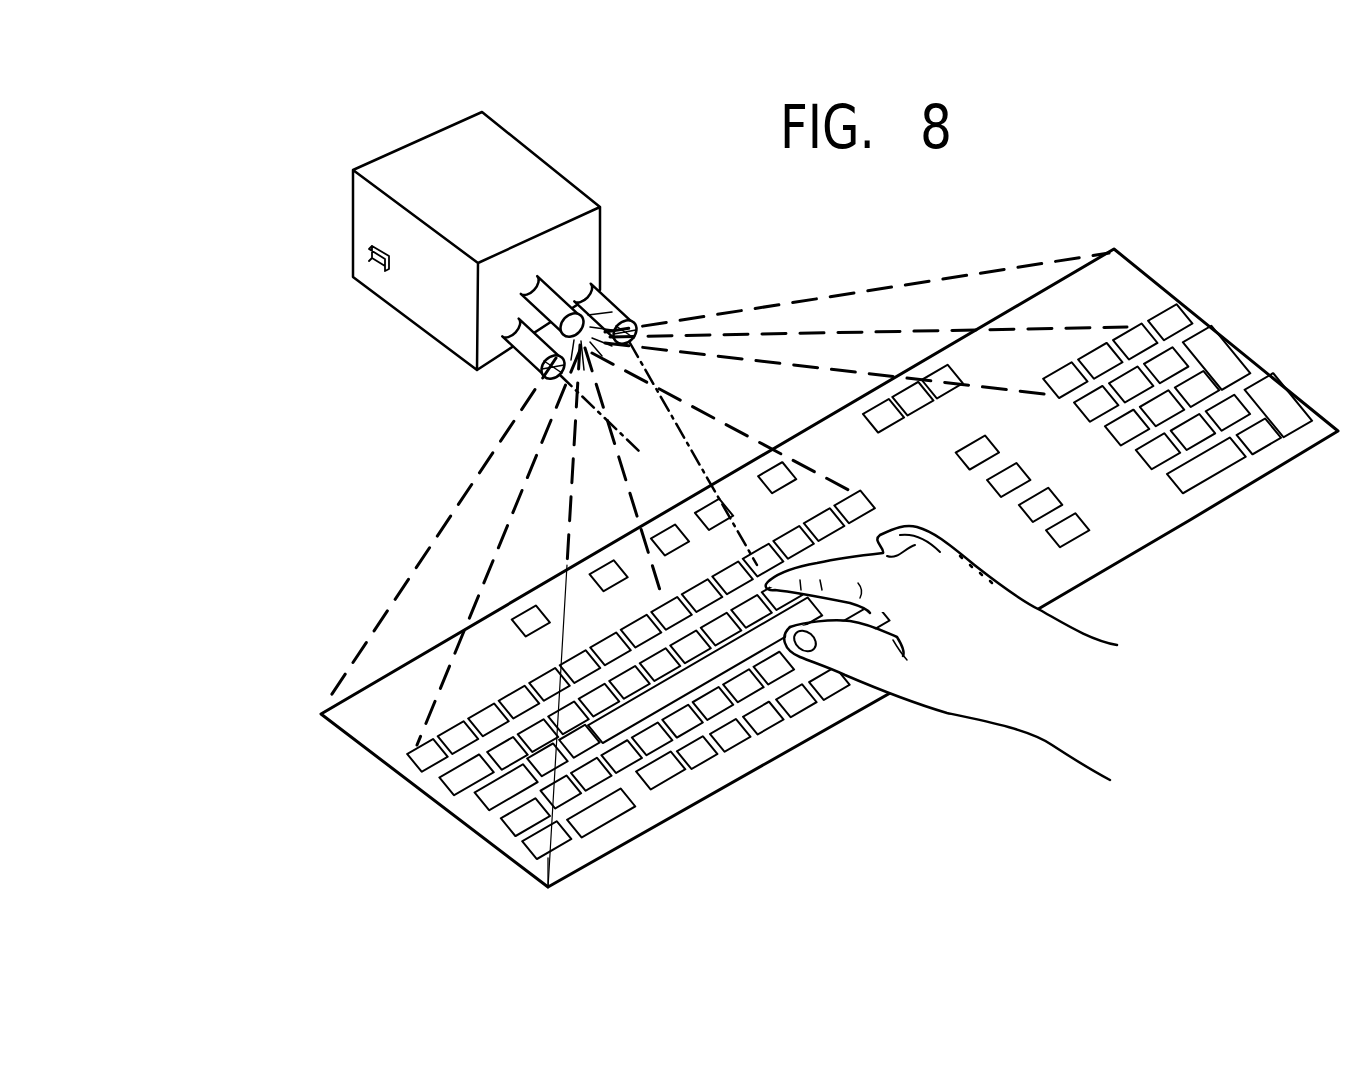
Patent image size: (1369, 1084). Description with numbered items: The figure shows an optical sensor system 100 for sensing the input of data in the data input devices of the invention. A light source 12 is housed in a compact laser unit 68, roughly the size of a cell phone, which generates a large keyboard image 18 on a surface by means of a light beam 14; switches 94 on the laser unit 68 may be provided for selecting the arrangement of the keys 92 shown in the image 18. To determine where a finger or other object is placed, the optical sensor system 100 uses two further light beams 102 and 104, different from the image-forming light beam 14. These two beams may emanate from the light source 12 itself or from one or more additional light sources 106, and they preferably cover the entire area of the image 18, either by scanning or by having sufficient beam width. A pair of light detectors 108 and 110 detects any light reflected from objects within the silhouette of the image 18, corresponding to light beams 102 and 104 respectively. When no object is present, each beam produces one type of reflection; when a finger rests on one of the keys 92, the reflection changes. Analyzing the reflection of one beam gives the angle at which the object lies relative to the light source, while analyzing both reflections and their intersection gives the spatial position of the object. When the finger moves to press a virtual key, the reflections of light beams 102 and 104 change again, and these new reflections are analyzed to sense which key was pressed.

The optical sensor system 100 is at (252, 444).
The laser unit 68 is at (383, 165).
The light source 12 is at (533, 278).
The additional light sources 106 is at (605, 290).
The light detector 110 is at (643, 318).
The switches 94 is at (373, 265).
The light detector 108 is at (530, 405).
The light beam 104 is at (672, 410).
The light beam 102 is at (575, 385).
The keys 92 is at (668, 530).
The light beam 14 is at (420, 578).
The image 18 is at (352, 752).